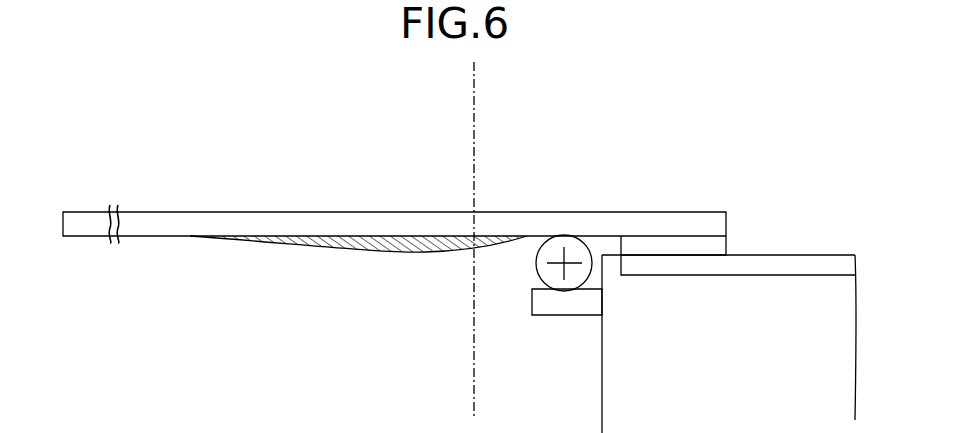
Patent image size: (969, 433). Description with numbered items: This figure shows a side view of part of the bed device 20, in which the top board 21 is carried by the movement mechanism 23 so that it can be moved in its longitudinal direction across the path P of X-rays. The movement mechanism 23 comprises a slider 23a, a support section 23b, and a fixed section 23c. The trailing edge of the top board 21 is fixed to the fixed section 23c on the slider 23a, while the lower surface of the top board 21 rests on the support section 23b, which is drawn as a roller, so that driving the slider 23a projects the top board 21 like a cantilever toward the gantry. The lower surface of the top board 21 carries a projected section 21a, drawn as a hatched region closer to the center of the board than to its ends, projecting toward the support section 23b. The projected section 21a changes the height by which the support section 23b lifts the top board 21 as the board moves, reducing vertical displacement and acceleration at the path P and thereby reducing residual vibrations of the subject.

The bed device 20 is at (602, 403).
The top board 21 is at (437, 212).
The projected section 21a is at (434, 253).
The movement mechanism 23 is at (675, 281).
The slider 23a is at (809, 255).
The support section 23b is at (535, 266).
The fixed section 23c is at (728, 246).
The path of X-rays P is at (476, 130).